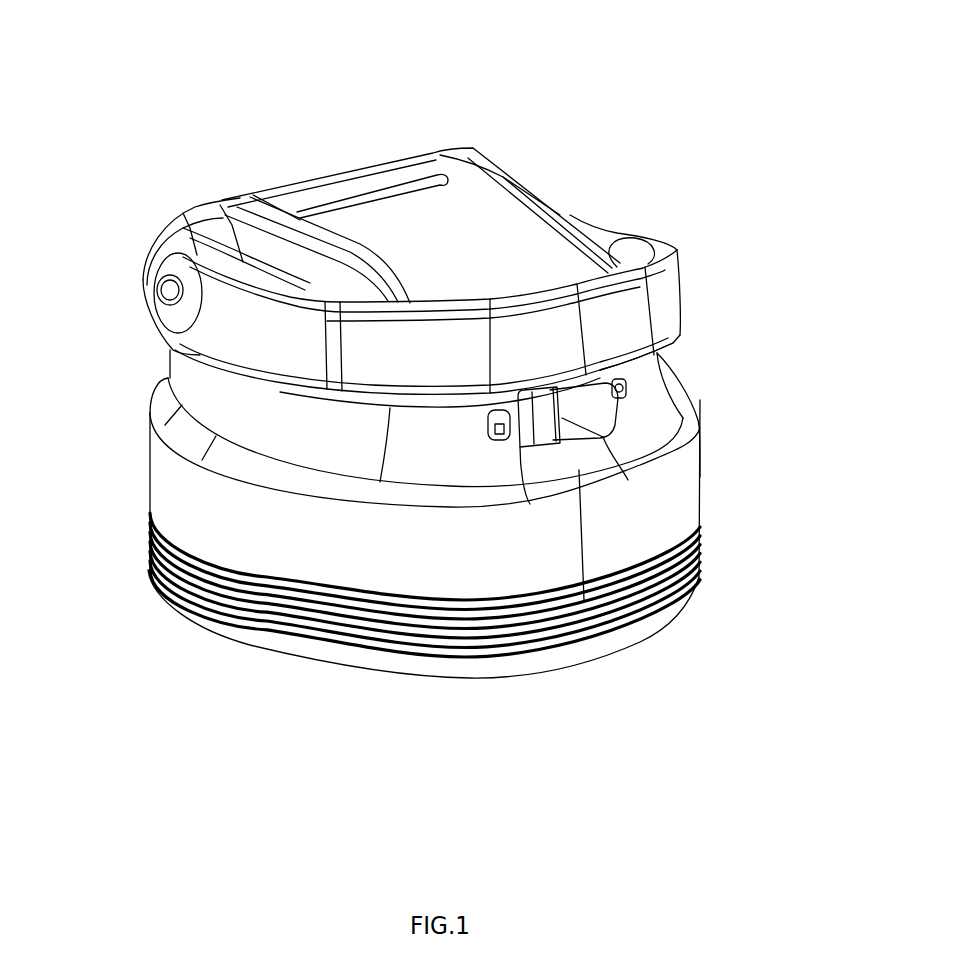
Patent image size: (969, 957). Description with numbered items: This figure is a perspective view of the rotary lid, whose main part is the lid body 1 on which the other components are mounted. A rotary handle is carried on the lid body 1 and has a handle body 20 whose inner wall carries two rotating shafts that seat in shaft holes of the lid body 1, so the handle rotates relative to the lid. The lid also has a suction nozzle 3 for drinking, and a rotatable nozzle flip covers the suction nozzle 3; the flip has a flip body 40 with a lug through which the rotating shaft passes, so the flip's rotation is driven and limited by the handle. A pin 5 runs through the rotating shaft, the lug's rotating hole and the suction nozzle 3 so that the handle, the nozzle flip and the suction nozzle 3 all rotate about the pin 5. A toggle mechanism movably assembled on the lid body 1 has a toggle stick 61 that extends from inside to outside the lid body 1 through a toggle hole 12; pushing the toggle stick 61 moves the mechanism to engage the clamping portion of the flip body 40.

The lid body 1 is at (673, 507).
The suction nozzle 3 is at (343, 190).
The pin 5 is at (183, 293).
The toggle hole 12 is at (556, 470).
The handle body 20 is at (668, 300).
The flip body 40 is at (494, 233).
The toggle stick 61 is at (663, 357).